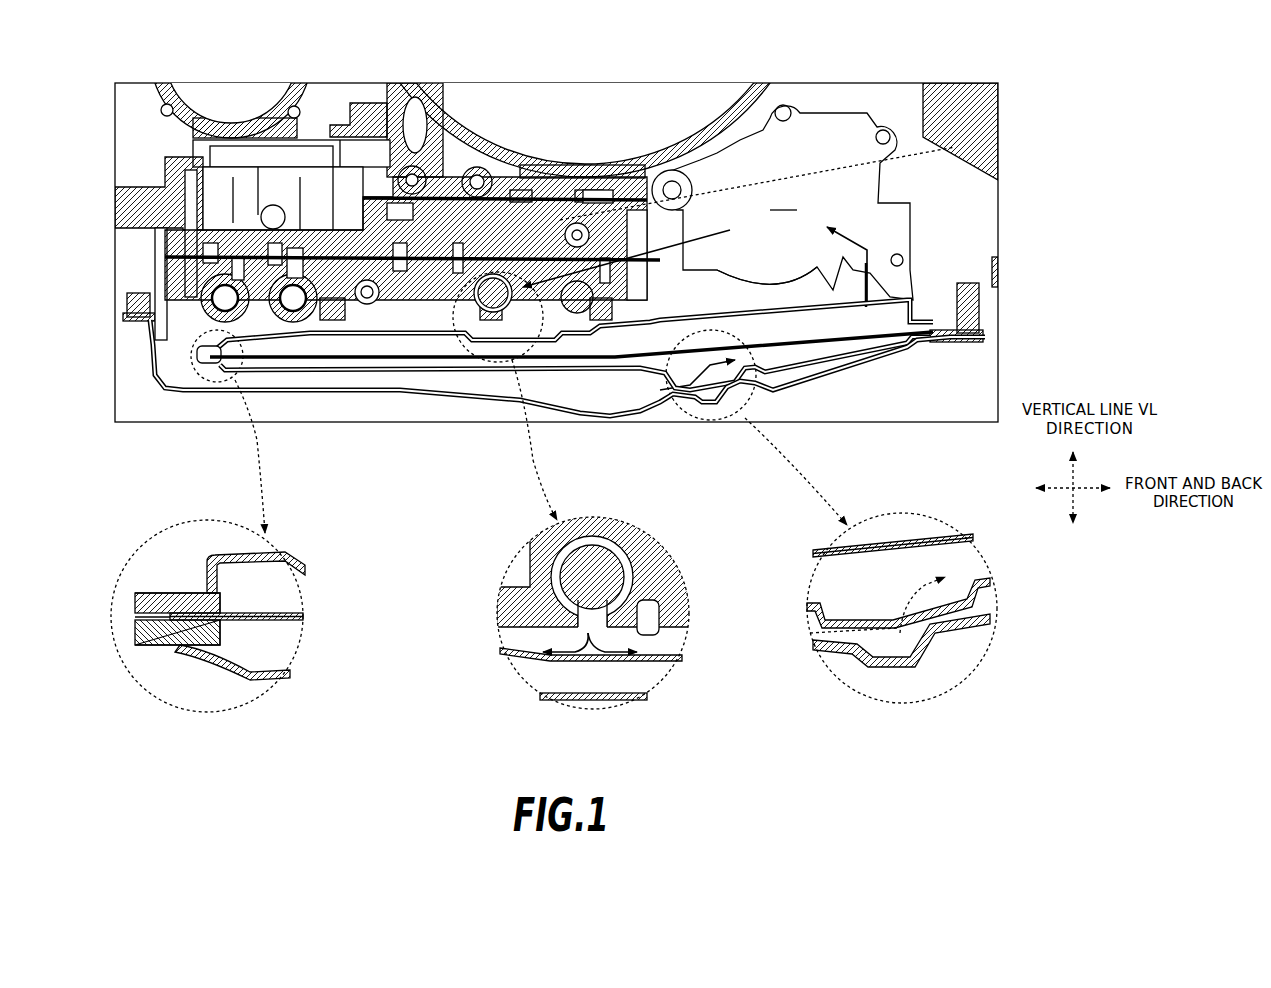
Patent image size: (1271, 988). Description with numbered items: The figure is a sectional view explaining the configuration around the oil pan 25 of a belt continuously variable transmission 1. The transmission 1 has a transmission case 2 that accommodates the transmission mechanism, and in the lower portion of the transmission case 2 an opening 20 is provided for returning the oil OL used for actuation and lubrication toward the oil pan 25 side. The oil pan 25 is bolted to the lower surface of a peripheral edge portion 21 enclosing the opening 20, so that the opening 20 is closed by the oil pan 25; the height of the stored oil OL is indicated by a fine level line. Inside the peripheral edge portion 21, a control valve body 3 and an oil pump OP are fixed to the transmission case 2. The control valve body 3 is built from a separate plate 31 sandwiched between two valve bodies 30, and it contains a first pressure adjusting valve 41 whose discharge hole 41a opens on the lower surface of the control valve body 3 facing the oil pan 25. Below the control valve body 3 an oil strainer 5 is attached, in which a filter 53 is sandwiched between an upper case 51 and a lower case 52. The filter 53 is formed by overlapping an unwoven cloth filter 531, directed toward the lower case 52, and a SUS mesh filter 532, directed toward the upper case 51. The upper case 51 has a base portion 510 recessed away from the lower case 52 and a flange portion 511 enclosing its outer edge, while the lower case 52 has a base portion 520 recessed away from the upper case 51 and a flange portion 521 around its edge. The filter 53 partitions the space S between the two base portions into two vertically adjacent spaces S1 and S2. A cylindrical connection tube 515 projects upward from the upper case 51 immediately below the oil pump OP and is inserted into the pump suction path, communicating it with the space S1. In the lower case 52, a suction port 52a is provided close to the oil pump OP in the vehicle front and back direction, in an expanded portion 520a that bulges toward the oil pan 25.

The belt continuously variable transmission 1 is at (1012, 70).
The transmission case 2 is at (1000, 124).
The control valve body 3 is at (555, 170).
The oil strainer 5 is at (928, 270).
The opening 20 is at (985, 288).
The peripheral edge portion 21 is at (985, 322).
The oil pan 25 is at (880, 382).
The valve body 30 is at (150, 232).
The separate plate 31 is at (150, 266).
The first pressure adjusting valve 41 is at (530, 545).
The discharge hole 41a is at (500, 620).
The upper case 51 is at (255, 480).
The base portion 510 is at (228, 556).
The flange portion 511 is at (155, 592).
The connection tube 515 is at (833, 280).
The lower case 52 is at (230, 755).
The base portion 520 is at (213, 693).
The expanded portion 520a is at (815, 631).
The flange portion 521 is at (152, 680).
The suction port 52a is at (877, 612).
The filter 53 is at (700, 340).
The unwoven cloth filter 531 is at (267, 622).
The SUS mesh filter 532 is at (257, 613).
The oil pump OP is at (783, 195).
The oil OL is at (985, 207).
The space S is at (363, 585).
The upper space S1 is at (287, 597).
The lower space S2 is at (287, 647).